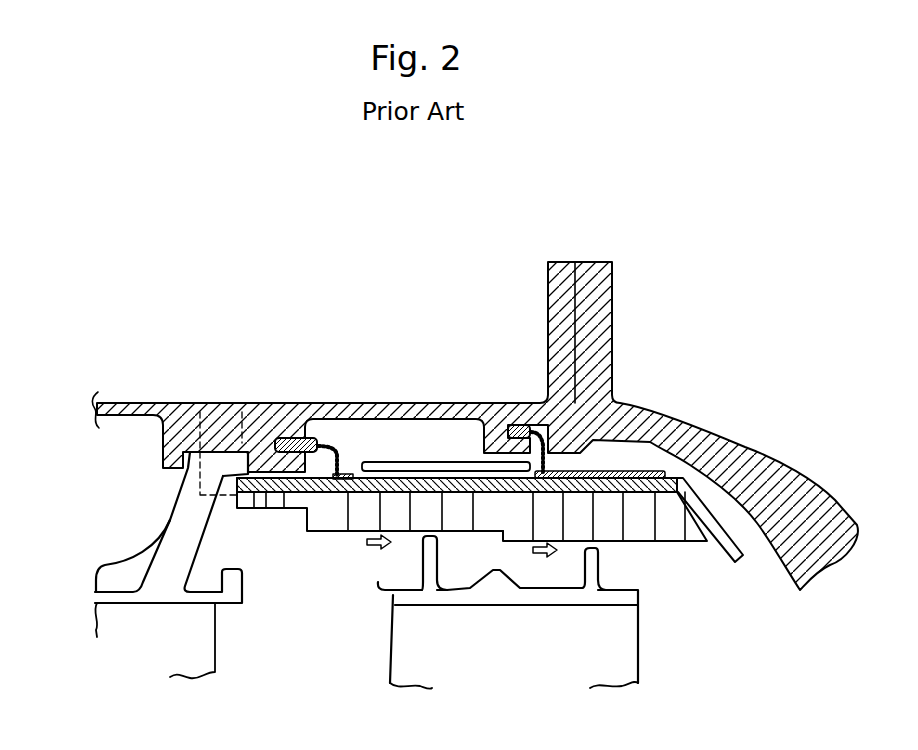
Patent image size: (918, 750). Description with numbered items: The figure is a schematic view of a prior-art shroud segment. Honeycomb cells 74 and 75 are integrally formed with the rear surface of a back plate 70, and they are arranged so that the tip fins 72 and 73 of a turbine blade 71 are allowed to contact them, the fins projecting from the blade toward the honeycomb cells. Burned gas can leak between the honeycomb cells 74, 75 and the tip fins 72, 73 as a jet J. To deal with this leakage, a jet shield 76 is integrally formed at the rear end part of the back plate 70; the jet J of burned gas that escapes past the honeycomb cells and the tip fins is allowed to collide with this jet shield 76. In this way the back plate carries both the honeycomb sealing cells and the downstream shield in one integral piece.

The back plate 70 is at (658, 478).
The turbine blade 71 is at (532, 662).
The tip fin 72 is at (440, 572).
The tip fin 73 is at (597, 575).
The honeycomb cell 74 is at (342, 533).
The honeycomb cell 75 is at (615, 528).
The jet shield 76 is at (740, 540).
The jet of burned gas J is at (372, 549).